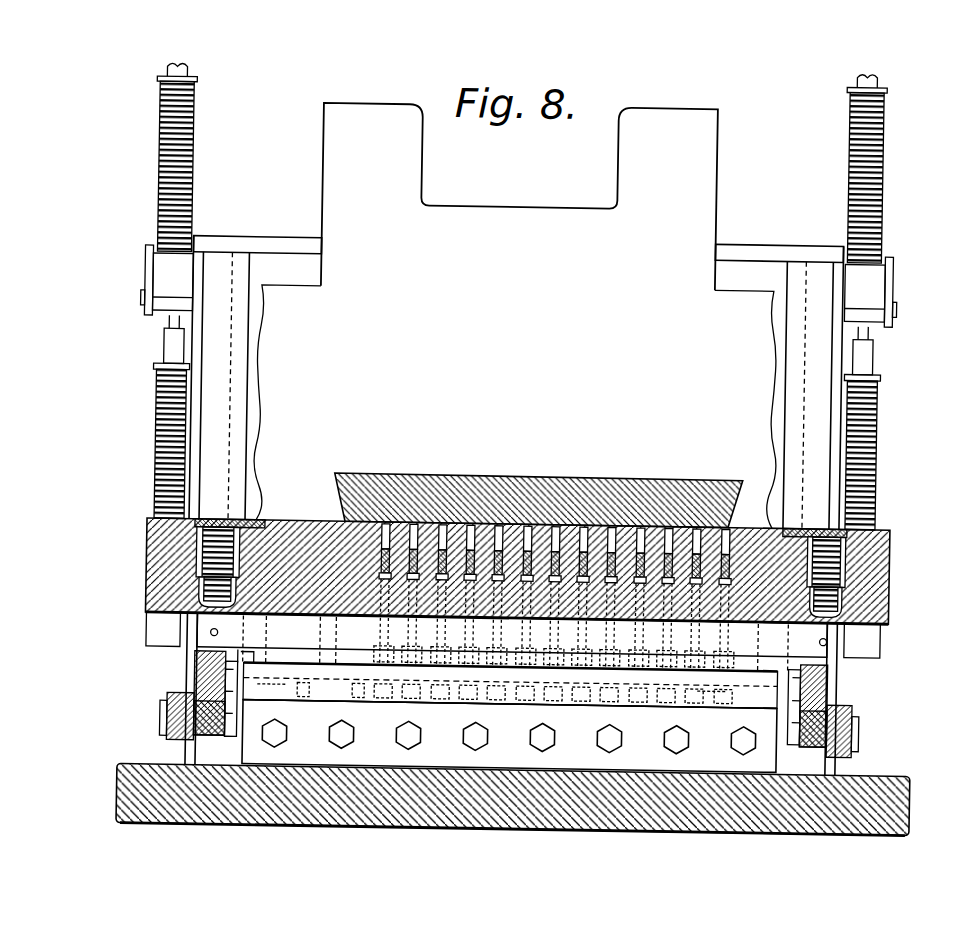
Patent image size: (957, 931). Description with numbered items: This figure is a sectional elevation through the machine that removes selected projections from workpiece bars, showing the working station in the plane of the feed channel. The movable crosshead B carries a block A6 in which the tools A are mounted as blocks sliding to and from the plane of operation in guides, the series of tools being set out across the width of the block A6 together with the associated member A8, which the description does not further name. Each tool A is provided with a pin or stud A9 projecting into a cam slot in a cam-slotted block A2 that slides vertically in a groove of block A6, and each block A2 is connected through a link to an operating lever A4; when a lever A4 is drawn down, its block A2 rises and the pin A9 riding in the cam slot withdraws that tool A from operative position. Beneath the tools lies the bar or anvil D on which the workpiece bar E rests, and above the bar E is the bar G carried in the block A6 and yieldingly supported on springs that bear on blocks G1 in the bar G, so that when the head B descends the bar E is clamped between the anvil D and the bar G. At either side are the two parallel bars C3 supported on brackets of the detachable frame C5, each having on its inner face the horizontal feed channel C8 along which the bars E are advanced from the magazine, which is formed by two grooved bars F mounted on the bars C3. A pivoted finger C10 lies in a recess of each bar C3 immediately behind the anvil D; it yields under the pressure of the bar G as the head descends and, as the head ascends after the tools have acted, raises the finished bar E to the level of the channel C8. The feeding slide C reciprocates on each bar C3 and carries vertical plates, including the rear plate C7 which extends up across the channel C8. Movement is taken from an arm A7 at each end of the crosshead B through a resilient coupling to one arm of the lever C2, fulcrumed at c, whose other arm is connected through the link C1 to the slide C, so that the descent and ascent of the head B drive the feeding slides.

The fulcrum c is at (201, 277).
The feeding block or slide C is at (215, 734).
The link C1 is at (154, 398).
The lever C2 is at (200, 526).
The bar C3 is at (180, 737).
The detachable frame C5 is at (552, 818).
The vertical plate C7 is at (178, 711).
The feed channel C8 is at (200, 660).
The pivoted finger C10 is at (215, 675).
The clamping bar G is at (210, 639).
The block G1 is at (213, 576).
The tool A is at (530, 657).
The cam-slotted block A2 is at (456, 660).
The lever A4 is at (528, 532).
The tool-carrying block A6 is at (289, 543).
The arm A7 is at (165, 619).
The die A8 is at (468, 485).
The pin or stud A9 is at (414, 656).
The movable crosshead B is at (517, 315).
The bar or anvil D is at (583, 668).
The workpiece bar E is at (305, 660).
The magazine bar F is at (245, 410).